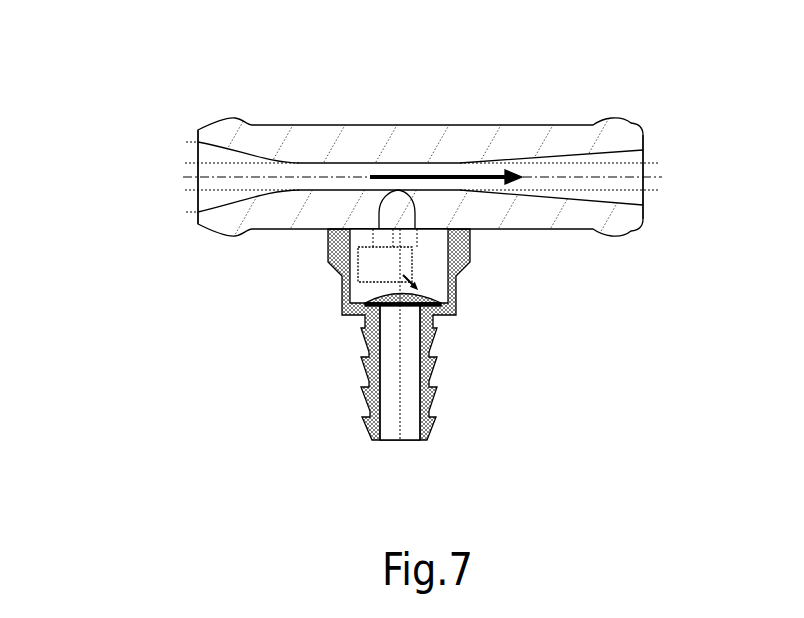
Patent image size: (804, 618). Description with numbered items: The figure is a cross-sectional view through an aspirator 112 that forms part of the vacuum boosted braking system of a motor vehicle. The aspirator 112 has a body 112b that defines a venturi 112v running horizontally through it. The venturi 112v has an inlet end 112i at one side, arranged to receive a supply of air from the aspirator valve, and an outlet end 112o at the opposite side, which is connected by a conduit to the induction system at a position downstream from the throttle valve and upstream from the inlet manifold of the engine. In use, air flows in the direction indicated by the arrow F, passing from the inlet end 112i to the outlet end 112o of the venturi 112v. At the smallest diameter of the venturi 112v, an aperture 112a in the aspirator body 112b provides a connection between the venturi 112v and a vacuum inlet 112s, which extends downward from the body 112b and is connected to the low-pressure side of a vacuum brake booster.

The aspirator 112 is at (398, 234).
The body 112b is at (400, 126).
The venturi 112v is at (263, 192).
The inlet end 112i is at (185, 156).
The outlet end 112o is at (657, 173).
The aperture 112a is at (397, 198).
The vacuum inlet 112s is at (363, 362).
The arrow F is at (446, 163).